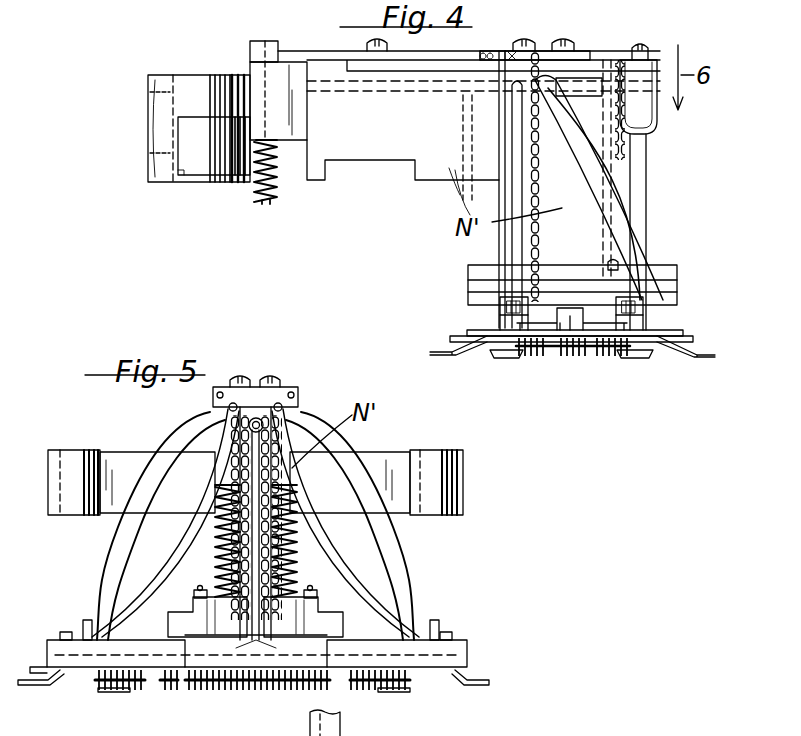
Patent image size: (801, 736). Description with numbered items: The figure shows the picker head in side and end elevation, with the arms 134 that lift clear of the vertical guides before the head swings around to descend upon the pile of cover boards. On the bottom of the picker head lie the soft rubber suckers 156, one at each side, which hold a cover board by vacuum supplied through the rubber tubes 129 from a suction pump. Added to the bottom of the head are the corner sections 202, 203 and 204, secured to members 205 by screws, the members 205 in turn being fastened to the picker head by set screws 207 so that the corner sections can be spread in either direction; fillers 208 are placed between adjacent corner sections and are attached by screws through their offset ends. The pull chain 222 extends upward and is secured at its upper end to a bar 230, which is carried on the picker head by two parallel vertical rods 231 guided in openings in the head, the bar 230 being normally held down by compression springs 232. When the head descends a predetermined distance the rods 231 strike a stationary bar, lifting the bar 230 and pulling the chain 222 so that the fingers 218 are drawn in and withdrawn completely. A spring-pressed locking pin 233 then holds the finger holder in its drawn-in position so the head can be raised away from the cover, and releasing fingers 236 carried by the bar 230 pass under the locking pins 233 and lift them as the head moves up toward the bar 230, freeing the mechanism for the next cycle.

In FIG. 4, the rubber tubes 129 is at (580, 163).
In FIG. 5, the rubber tubes 129 is at (122, 549).
In FIG. 5, the arms 134 is at (152, 426).
In FIG. 4, the soft rubber suckers 156 is at (503, 360).
In FIG. 5, the soft rubber suckers 156 is at (114, 692).
In FIG. 5, the corner section 202 is at (470, 662).
In FIG. 4, the corner section 203 is at (660, 336).
In FIG. 5, the corner section 203 is at (40, 662).
In FIG. 4, the corner section 204 is at (470, 331).
In FIG. 4, the members 205 is at (486, 290).
In FIG. 5, the members 205 is at (190, 602).
In FIG. 4, the set screws 207 is at (616, 264).
In FIG. 5, the set screws 207 is at (215, 571).
In FIG. 5, the fillers 208 is at (257, 694).
In FIG. 4, the fingers 218 is at (442, 348).
In FIG. 5, the fingers 218 is at (360, 688).
In FIG. 4, the pull chain 222 is at (612, 200).
In FIG. 5, the pull chain 222 is at (256, 515).
In FIG. 4, the bar 230 is at (472, 52).
In FIG. 5, the bar 230 is at (275, 382).
In FIG. 4, the vertical rods 231 is at (278, 210).
In FIG. 5, the vertical rods 231 is at (212, 529).
In FIG. 4, the compression springs 232 is at (272, 228).
In FIG. 5, the compression springs 232 is at (216, 512).
In FIG. 4, the locking pin 233 is at (618, 302).
In FIG. 5, the locking pin 233 is at (88, 620).
In FIG. 4, the releasing fingers 236 is at (499, 115).
In FIG. 5, the releasing fingers 236 is at (150, 580).